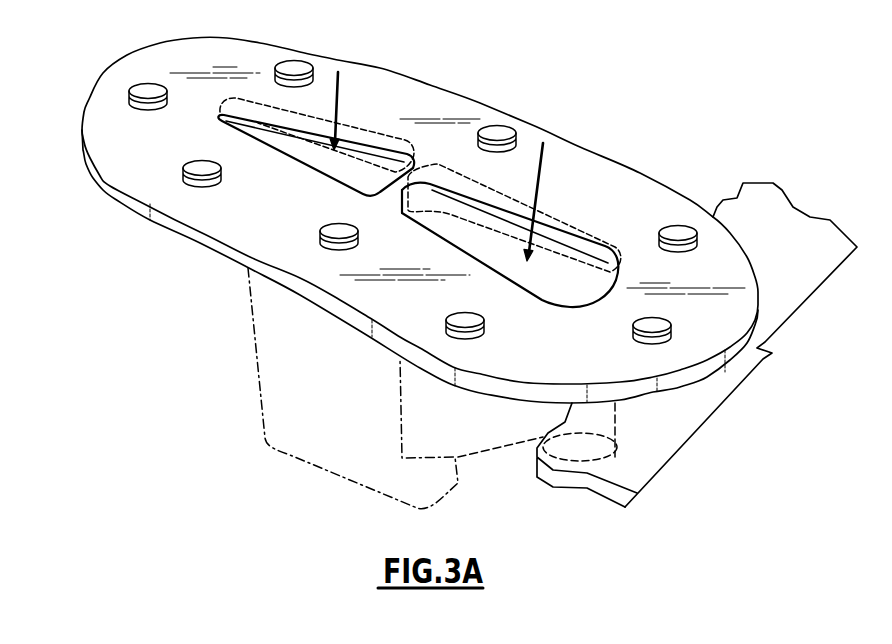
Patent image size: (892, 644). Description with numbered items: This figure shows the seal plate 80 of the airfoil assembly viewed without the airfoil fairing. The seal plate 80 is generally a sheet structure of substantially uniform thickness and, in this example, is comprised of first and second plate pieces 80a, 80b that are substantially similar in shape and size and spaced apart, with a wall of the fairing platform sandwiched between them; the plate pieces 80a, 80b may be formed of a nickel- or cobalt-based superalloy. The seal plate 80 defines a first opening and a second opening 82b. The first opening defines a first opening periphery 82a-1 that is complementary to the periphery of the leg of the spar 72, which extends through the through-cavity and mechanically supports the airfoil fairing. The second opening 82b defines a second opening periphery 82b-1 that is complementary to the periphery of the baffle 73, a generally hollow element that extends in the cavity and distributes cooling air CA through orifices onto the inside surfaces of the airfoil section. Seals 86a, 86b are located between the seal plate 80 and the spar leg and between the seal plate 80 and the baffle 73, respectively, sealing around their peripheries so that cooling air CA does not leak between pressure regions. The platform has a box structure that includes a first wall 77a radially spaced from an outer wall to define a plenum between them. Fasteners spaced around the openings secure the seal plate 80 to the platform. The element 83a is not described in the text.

The seal plate 80 is at (400, 254).
The first plate piece 80a is at (115, 200).
The second plate piece 80b is at (127, 213).
The second opening 82b is at (268, 100).
The second opening periphery 82b-1 is at (403, 214).
The first opening periphery 82a-1 is at (479, 195).
The slot opening 83a is at (558, 179).
The seal 86a is at (557, 237).
The seal 86b is at (233, 132).
The baffle 73 is at (352, 124).
The spar 72 is at (625, 220).
The first wall 77a is at (762, 205).
The cooling air CA is at (338, 72).